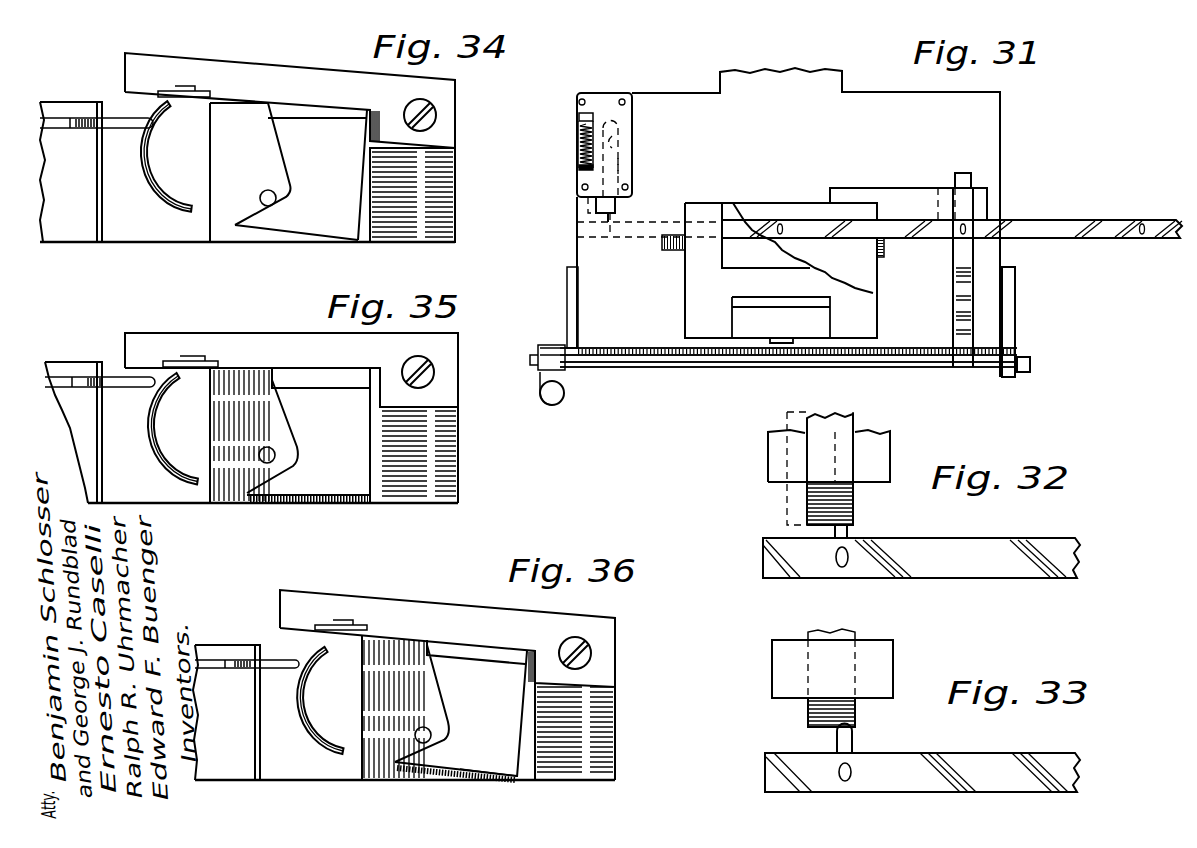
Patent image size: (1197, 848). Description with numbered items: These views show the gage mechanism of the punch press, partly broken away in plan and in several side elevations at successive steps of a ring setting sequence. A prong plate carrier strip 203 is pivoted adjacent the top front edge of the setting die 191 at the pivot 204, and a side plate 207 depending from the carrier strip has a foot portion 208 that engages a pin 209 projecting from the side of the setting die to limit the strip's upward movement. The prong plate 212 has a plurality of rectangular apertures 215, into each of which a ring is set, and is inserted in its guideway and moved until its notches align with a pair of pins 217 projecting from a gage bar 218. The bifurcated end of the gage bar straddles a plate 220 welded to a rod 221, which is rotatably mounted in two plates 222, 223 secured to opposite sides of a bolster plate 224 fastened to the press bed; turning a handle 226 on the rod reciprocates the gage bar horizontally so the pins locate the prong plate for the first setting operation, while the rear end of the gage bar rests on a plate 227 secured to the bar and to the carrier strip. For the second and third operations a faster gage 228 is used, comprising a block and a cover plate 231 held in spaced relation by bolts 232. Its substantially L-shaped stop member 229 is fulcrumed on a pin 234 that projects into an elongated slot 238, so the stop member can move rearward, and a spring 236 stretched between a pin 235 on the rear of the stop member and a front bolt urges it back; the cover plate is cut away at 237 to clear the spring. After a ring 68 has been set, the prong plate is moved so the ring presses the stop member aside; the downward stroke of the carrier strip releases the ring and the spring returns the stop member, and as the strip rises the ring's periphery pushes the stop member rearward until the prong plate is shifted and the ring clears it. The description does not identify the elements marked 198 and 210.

In FIG. 34, the ring 68 is at (147, 148).
In FIG. 35, the ring 68 is at (157, 432).
In FIG. 36, the ring 68 is at (305, 698).
In FIG. 31, the ring 68 is at (618, 216).
In FIG. 32, the ring 68 is at (848, 533).
In FIG. 33, the ring 68 is at (850, 738).
In FIG. 34, the setting die 191 is at (445, 204).
In FIG. 35, the setting die 191 is at (442, 438).
In FIG. 36, the setting die 191 is at (380, 768).
In FIG. 31, the setting die 191 is at (748, 327).
In FIG. 31, the guide block 198 is at (787, 343).
In FIG. 34, the prong plate carrier strip 203 is at (299, 78).
In FIG. 35, the prong plate carrier strip 203 is at (225, 340).
In FIG. 36, the prong plate carrier strip 203 is at (502, 622).
In FIG. 31, the prong plate carrier strip 203 is at (685, 298).
In FIG. 34, the pivot 204 is at (428, 108).
In FIG. 35, the pivot 204 is at (428, 378).
In FIG. 36, the pivot 204 is at (593, 650).
In FIG. 34, the side plate 207 is at (262, 224).
In FIG. 35, the side plate 207 is at (268, 488).
In FIG. 36, the side plate 207 is at (414, 764).
In FIG. 35, the foot portion 208 is at (342, 491).
In FIG. 36, the foot portion 208 is at (505, 771).
In FIG. 34, the pin 209 is at (268, 190).
In FIG. 35, the pin 209 is at (270, 454).
In FIG. 36, the pin 209 is at (429, 729).
In FIG. 32, the pin 209 is at (1005, 570).
In FIG. 33, the pin 209 is at (992, 784).
In FIG. 31, the stop 210 is at (673, 252).
In FIG. 35, the prong plate 212 is at (165, 362).
In FIG. 36, the prong plate 212 is at (322, 625).
In FIG. 31, the prong plate 212 is at (1038, 227).
In FIG. 33, the prong plate 212 is at (765, 773).
In FIG. 31, the rectangular apertures 215 is at (1139, 228).
In FIG. 31, the pins 217 is at (958, 242).
In FIG. 31, the gage bar 218 is at (960, 317).
In FIG. 31, the plate 220 is at (926, 358).
In FIG. 31, the rod 221 is at (605, 361).
In FIG. 31, the plate 222 is at (567, 272).
In FIG. 31, the plate 223 is at (1016, 297).
In FIG. 31, the bolster plate 224 is at (593, 310).
In FIG. 31, the handle 226 is at (563, 402).
In FIG. 31, the plate 227 is at (892, 197).
In FIG. 34, the gage 228 is at (75, 215).
In FIG. 35, the gage 228 is at (100, 468).
In FIG. 36, the gage 228 is at (243, 766).
In FIG. 31, the gage 228 is at (633, 128).
In FIG. 32, the gage 228 is at (768, 462).
In FIG. 33, the gage 228 is at (787, 677).
In FIG. 34, the stop member 229 is at (119, 118).
In FIG. 35, the stop member 229 is at (118, 377).
In FIG. 36, the stop member 229 is at (272, 658).
In FIG. 31, the stop member 229 is at (616, 205).
In FIG. 32, the stop member 229 is at (840, 498).
In FIG. 33, the stop member 229 is at (806, 710).
In FIG. 31, the cover plate 231 is at (627, 165).
In FIG. 31, the bolts 232 is at (622, 99).
In FIG. 31, the pin 234 is at (630, 124).
In FIG. 31, the pin 235 is at (579, 119).
In FIG. 31, the spring 236 is at (580, 152).
In FIG. 31, the cut away 237 is at (579, 166).
In FIG. 31, the elongated slot 238 is at (618, 148).